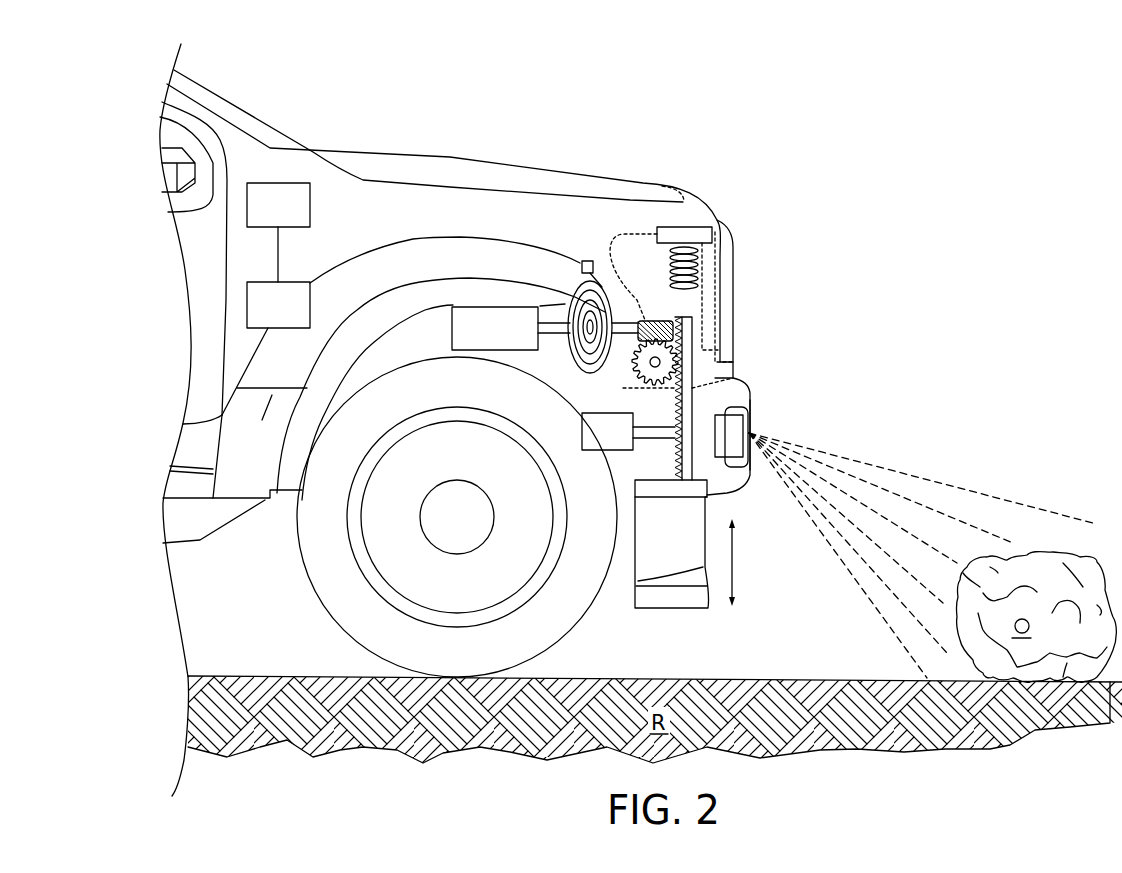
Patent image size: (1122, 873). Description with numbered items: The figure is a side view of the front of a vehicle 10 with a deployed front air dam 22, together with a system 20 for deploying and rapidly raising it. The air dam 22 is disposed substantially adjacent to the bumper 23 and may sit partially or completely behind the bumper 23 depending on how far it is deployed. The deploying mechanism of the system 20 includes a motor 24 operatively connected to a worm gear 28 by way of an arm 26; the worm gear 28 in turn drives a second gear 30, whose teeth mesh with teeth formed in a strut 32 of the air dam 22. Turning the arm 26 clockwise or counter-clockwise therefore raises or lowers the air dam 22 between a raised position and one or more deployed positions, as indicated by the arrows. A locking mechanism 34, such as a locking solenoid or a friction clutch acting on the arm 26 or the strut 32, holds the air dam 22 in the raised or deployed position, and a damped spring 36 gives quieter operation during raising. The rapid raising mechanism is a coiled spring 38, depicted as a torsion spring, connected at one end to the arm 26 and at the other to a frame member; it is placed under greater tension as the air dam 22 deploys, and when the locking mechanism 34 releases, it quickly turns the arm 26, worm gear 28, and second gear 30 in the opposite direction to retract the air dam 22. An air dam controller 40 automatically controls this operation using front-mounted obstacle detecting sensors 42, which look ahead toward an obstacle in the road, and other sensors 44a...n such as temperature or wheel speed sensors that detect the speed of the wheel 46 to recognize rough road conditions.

The vehicle 10 is at (331, 100).
The system 20 is at (603, 228).
The air dam 22 is at (688, 523).
The bumper 23 is at (750, 391).
The motor 24 is at (462, 327).
The arm 26 is at (560, 316).
The worm gear 28 is at (647, 320).
The second gear 30 is at (640, 370).
The strut 32 is at (697, 363).
The locking mechanism 34 is at (603, 437).
The damped spring 36 is at (700, 258).
The coiled spring 38 is at (584, 260).
The air dam controller 40 is at (285, 203).
The obstacle detecting sensors 42 is at (747, 427).
The sensors 44a...n is at (285, 304).
The wheel 46 is at (323, 550).